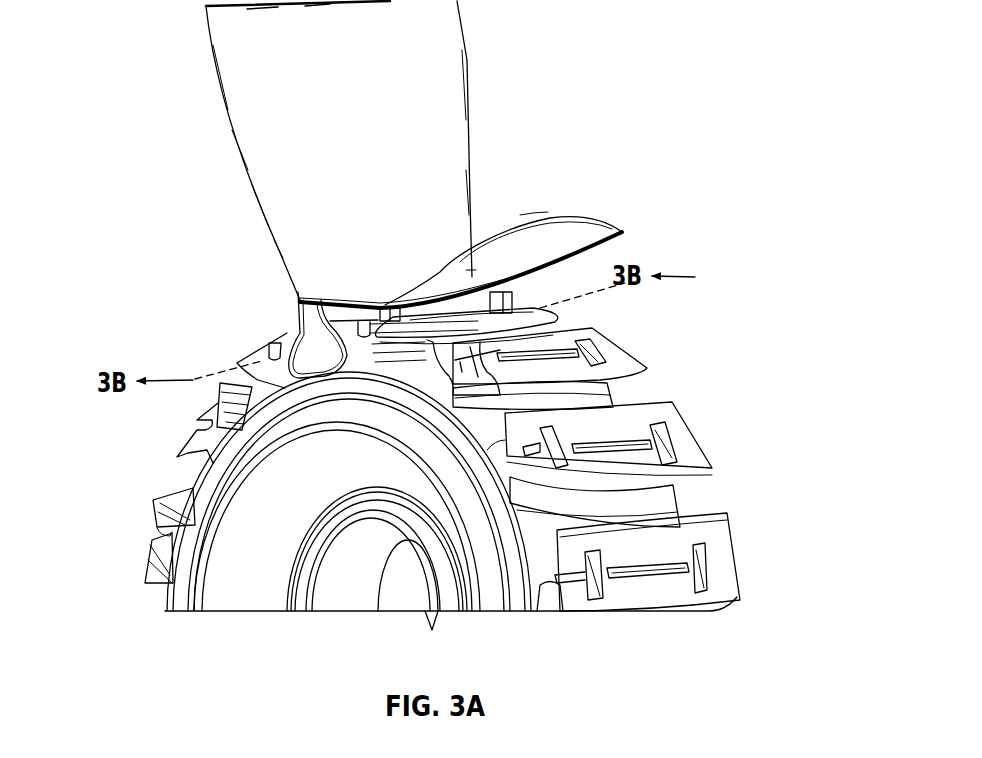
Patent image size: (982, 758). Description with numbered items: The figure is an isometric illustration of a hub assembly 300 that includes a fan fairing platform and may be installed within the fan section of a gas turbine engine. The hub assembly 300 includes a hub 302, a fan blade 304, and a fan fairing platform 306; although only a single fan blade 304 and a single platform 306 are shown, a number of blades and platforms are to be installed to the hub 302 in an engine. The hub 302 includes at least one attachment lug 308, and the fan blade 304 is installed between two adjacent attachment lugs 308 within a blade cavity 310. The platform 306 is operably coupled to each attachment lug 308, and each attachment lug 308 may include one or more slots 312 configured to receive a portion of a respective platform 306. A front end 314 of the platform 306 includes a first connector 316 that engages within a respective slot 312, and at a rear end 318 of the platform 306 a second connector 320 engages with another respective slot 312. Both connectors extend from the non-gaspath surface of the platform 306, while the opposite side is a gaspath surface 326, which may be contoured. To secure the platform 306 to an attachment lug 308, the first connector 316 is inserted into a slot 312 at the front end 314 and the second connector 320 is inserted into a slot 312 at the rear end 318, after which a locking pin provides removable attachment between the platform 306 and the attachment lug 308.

The hub assembly 300 is at (684, 55).
The hub 302 is at (198, 478).
The fan blade 304 is at (469, 82).
The fan fairing platform 306 is at (594, 222).
The attachment lug 308 is at (623, 343).
The blade cavity 310 is at (232, 384).
The slot 312 is at (665, 447).
The front end 314 is at (316, 290).
The first connector 316 is at (386, 310).
The rear end 318 is at (527, 210).
The second connector 320 is at (517, 302).
The gaspath surface 326 is at (471, 276).